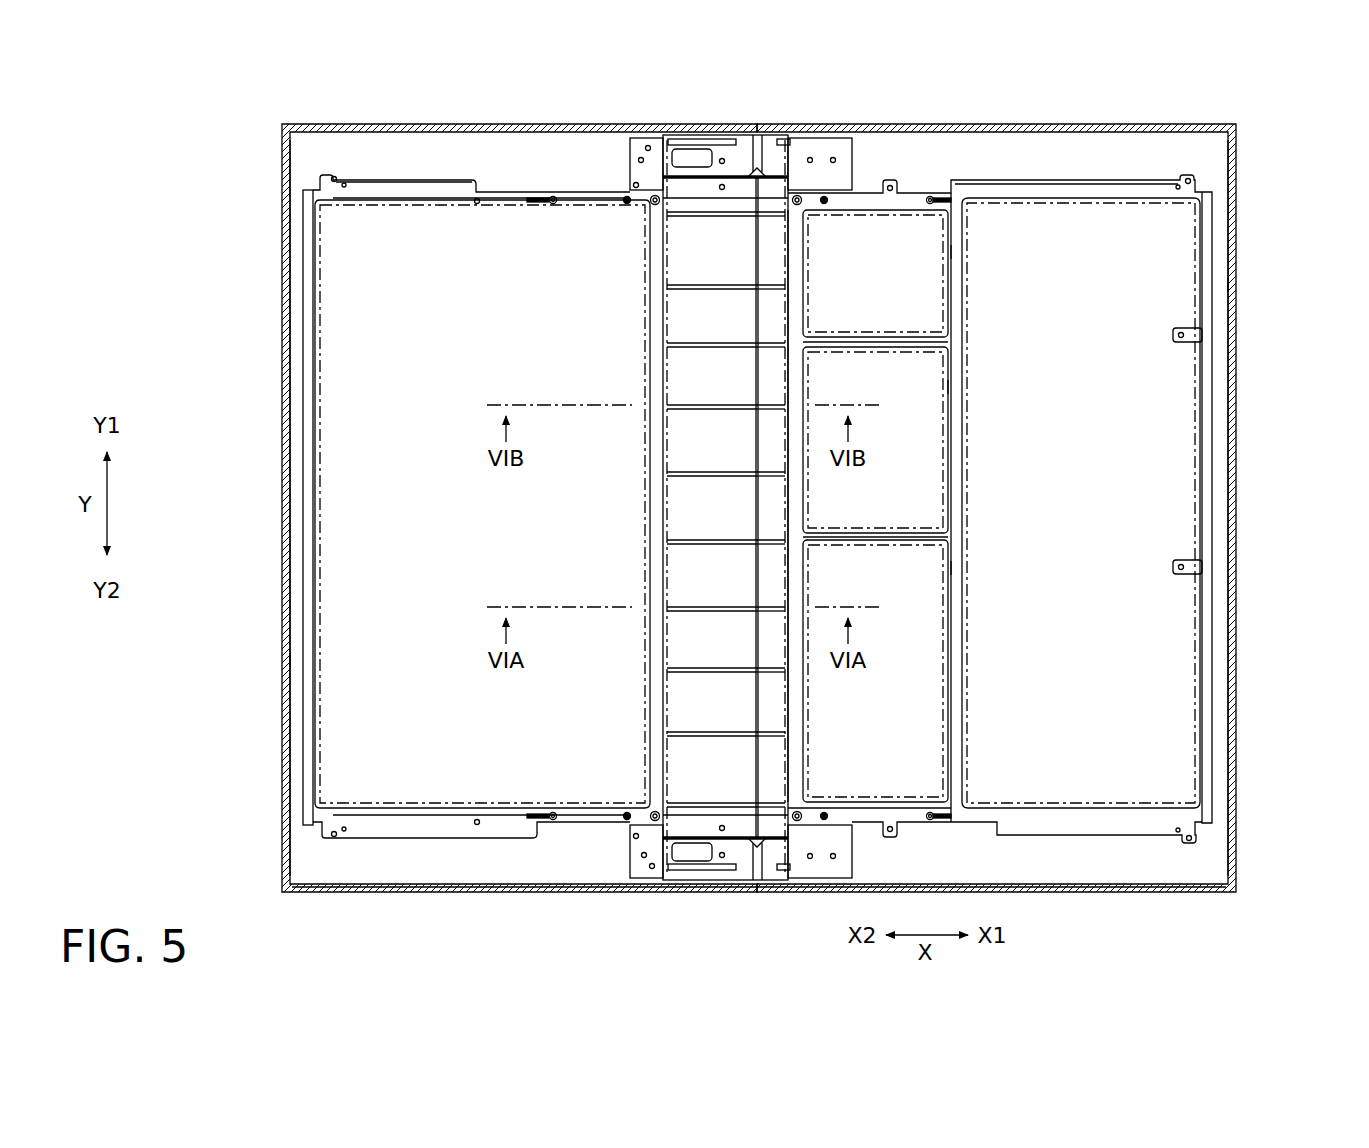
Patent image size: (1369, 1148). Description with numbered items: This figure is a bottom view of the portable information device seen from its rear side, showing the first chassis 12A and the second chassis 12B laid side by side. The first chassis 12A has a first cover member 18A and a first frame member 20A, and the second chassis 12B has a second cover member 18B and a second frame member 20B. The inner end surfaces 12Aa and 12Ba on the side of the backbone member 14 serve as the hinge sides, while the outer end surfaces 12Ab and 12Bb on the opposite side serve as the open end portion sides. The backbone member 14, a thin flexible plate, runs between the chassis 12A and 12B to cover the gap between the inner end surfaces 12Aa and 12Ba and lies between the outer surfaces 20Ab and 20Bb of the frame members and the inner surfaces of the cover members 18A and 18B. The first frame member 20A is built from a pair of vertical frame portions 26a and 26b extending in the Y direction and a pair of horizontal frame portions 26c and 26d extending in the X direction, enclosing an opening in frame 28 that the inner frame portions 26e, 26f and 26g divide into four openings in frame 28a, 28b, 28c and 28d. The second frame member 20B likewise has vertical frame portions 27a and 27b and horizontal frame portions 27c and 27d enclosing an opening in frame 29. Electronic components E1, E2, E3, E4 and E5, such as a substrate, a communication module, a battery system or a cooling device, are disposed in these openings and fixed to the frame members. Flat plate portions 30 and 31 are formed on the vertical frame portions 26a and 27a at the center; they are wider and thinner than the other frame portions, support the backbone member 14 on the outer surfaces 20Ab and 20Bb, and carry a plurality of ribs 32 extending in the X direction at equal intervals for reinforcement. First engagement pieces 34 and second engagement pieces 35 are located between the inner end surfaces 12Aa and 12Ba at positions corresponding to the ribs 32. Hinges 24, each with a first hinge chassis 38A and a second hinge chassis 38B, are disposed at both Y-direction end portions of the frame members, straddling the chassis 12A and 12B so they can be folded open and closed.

The first chassis 12A is at (1138, 101).
The second chassis 12B is at (478, 101).
The inner end surface of the first chassis 12Aa is at (757, 555).
The inner end surface of the second chassis 12Ba is at (757, 572).
The outer end surface of the first chassis 12Ab is at (1236, 775).
The outer end surface of the second chassis 12Bb is at (290, 785).
The backbone member 14 is at (742, 133).
The first cover member 18A is at (1051, 895).
The second cover member 18B is at (464, 895).
The first frame member 20A is at (1117, 170).
The outer surface of the first frame member 20Ab is at (1002, 186).
The second frame member 20B is at (440, 172).
The outer surface of the second frame member 20Bb is at (382, 186).
The hinge 24 is at (713, 136).
The vertical frame portion 26a is at (789, 378).
The vertical frame portion 26b is at (1200, 482).
The horizontal frame portion 26c is at (1100, 199).
The horizontal frame portion 26d is at (1100, 826).
The inner frame portion 26e is at (953, 437).
The inner frame portion 26f is at (903, 338).
The inner frame portion 26g is at (893, 533).
The vertical frame portion 27a is at (673, 484).
The vertical frame portion 27b is at (318, 428).
The horizontal frame portion 27c is at (428, 207).
The horizontal frame portion 27d is at (440, 826).
The opening in frame 28 is at (1081, 503).
The opening in frame 28a is at (1081, 503).
The opening in frame 28b is at (875, 273).
The opening in frame 28c is at (875, 440).
The opening in frame 28d is at (875, 671).
The opening in frame 29 is at (482, 504).
The flat plate portion 30 is at (782, 307).
The flat plate portion 31 is at (668, 292).
The rib 32 is at (665, 270).
The first engagement piece 34 is at (750, 283).
The second engagement piece 35 is at (766, 252).
The first hinge chassis 38A is at (770, 150).
The second hinge chassis 38B is at (680, 150).
The electronic component E1 is at (1232, 285).
The electronic component E2 is at (952, 252).
The electronic component E3 is at (948, 387).
The electronic component E4 is at (951, 566).
The electronic component E5 is at (290, 660).